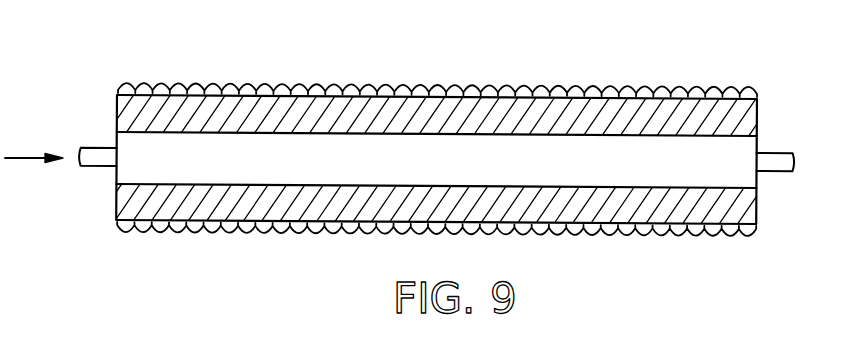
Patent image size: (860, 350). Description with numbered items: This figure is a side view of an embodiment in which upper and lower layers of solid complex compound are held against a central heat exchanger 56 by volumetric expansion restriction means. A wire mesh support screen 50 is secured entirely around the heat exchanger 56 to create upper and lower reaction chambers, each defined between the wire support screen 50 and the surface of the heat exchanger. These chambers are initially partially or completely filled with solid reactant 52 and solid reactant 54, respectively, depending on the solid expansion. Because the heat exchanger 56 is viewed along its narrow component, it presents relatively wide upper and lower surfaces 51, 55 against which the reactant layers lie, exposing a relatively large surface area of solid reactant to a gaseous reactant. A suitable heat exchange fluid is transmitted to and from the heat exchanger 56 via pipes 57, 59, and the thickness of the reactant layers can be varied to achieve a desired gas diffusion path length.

The wire mesh support screen 50 is at (383, 87).
The upper surface of heat exchanger 51 is at (482, 131).
The solid reactant 52 is at (757, 109).
The solid reactant 54 is at (757, 195).
The lower surface of heat exchanger 55 is at (512, 188).
The heat exchanger 56 is at (117, 135).
The pipe 57 is at (92, 168).
The pipe 59 is at (786, 151).